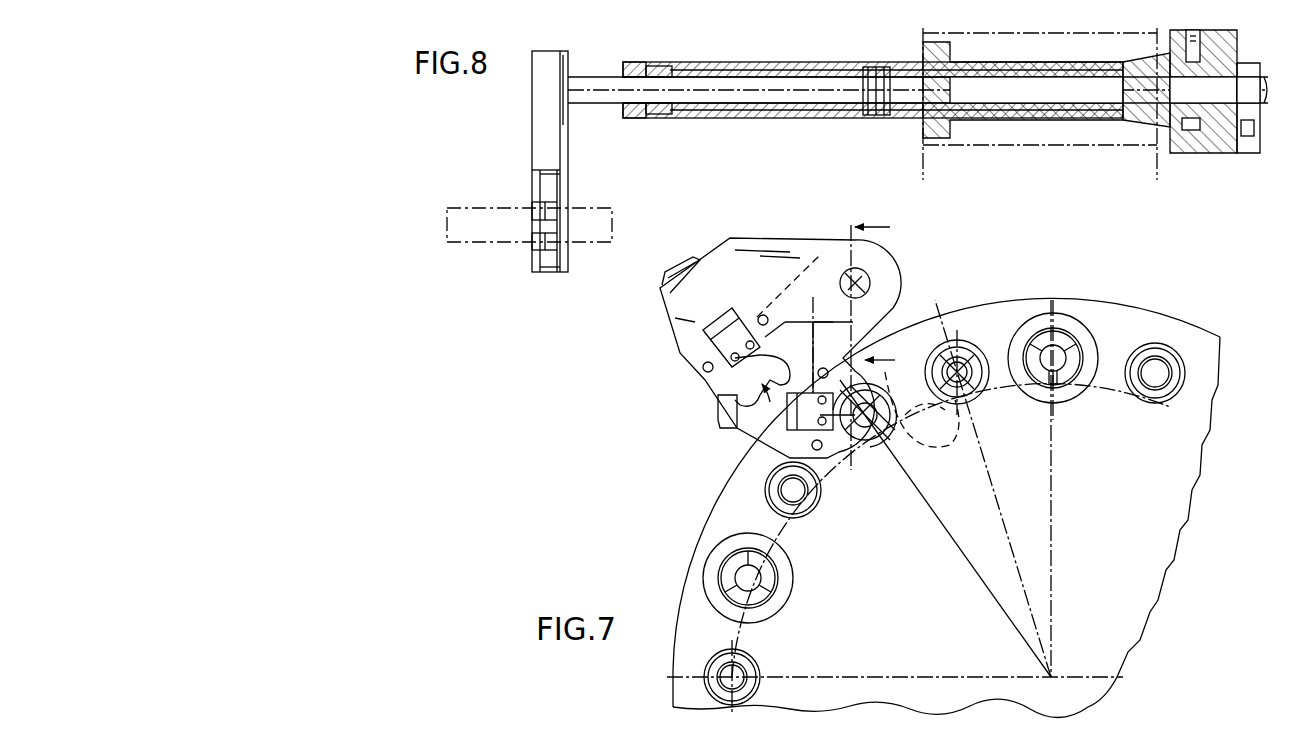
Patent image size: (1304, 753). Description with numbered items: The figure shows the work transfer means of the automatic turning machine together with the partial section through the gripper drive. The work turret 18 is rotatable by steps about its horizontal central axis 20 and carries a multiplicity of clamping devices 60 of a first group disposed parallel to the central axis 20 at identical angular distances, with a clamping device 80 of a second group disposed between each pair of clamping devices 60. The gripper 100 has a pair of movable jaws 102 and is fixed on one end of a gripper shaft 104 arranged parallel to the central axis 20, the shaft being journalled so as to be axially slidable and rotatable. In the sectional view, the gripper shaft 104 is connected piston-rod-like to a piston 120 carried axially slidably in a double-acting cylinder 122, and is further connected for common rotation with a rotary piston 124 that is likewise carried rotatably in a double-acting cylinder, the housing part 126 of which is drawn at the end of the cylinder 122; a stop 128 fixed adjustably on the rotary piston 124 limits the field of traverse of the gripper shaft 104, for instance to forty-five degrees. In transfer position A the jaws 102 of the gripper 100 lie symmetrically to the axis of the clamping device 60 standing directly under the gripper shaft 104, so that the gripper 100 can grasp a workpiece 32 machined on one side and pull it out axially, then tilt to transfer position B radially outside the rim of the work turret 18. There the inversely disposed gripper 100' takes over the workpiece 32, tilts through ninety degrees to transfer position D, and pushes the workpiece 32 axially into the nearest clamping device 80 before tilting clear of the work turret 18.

In FIG. 8, the gripper 100 is at (510, 161).
In FIG. 7, the gripper 100 is at (830, 361).
In FIG. 7, the gripper 100' is at (935, 439).
In FIG. 7, the movable jaws 102 is at (732, 464).
In FIG. 8, the gripper shaft 104 is at (600, 98).
In FIG. 8, the piston 120 is at (866, 108).
In FIG. 8, the double-acting cylinder 122 is at (708, 118).
In FIG. 8, the rotary piston 124 is at (1193, 118).
In FIG. 8, the flange 126 is at (1157, 153).
In FIG. 8, the stop 128 is at (1246, 136).
In FIG. 8, the workpiece 32 is at (483, 216).
In FIG. 7, the work turret 18 is at (1130, 320).
In FIG. 7, the central axis 20 is at (1053, 676).
In FIG. 7, the clamping device 60 is at (1064, 311).
In FIG. 7, the clamping device 80 is at (814, 517).